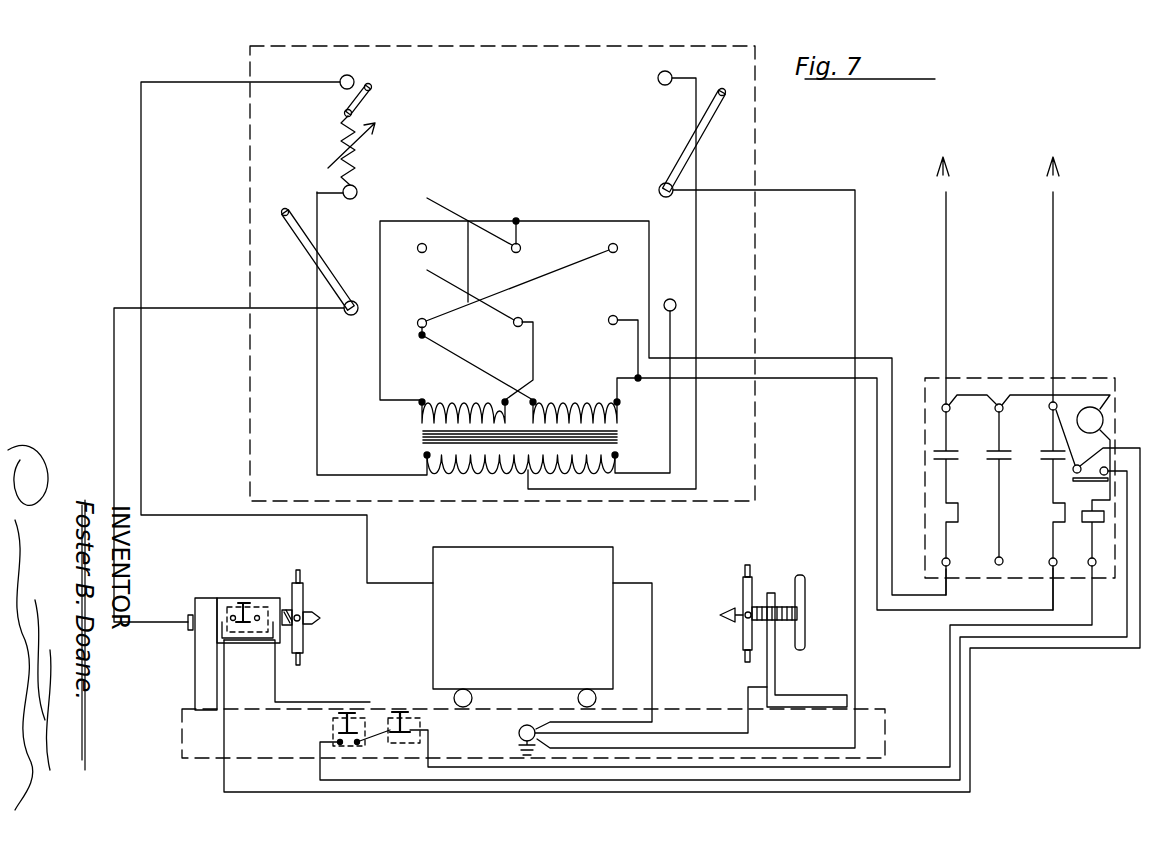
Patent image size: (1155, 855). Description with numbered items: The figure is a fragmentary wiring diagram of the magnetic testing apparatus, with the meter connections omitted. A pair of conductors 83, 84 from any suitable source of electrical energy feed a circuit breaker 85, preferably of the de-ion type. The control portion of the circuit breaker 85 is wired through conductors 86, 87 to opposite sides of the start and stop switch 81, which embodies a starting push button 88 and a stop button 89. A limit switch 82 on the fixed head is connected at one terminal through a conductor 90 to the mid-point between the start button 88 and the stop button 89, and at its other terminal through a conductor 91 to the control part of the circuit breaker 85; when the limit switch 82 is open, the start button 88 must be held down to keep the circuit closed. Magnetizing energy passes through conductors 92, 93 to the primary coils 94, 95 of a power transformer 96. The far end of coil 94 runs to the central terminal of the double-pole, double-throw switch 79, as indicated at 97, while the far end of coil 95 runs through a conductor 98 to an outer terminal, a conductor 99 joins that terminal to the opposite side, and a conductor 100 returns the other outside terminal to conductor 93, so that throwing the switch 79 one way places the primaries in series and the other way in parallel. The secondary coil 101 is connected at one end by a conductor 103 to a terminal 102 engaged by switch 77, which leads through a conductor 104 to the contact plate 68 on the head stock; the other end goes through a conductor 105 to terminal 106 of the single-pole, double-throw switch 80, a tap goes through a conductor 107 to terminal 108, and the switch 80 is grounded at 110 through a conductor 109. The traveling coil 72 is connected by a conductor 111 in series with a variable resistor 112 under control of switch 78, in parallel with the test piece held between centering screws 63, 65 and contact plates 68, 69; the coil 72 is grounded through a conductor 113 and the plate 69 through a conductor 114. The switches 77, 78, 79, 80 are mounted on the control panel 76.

The centering screw 63 is at (331, 619).
The centering screw 65 is at (728, 622).
The contact plate 68 is at (305, 603).
The contact plate 69 is at (752, 595).
The traveling coil 72 is at (535, 568).
The control panel 76 is at (735, 137).
The single throw switch 77 is at (330, 278).
The single throw switch 78 is at (370, 99).
The double-pole, double-throw switch 79 is at (470, 252).
The single-pole, double-throw switch 80 is at (707, 130).
The start and stop switch 81 is at (369, 718).
The limit switch 82 is at (244, 602).
The conductor 83 is at (948, 266).
The conductor 84 is at (1052, 272).
The circuit breaker 85 is at (1022, 408).
The conductor 86 is at (948, 647).
The conductor 87 is at (1040, 650).
The starting push button 88 is at (337, 731).
The stop button 89 is at (408, 716).
The conductor 90 is at (342, 690).
The conductor 91 is at (1130, 608).
The conductor 92 is at (380, 372).
The conductor 93 is at (828, 382).
The primary coil 94 is at (470, 398).
The primary coil 95 is at (588, 392).
The power transformer 96 is at (412, 444).
The connection to central terminal 97 is at (537, 357).
The conductor 98 is at (480, 350).
The conductor 99 is at (560, 264).
The conductor 100 is at (638, 340).
The secondary coil 101 is at (486, 470).
The terminal 102 is at (357, 193).
The conductor 103 is at (317, 367).
The conductor 104 is at (113, 426).
The conductor 105 is at (672, 428).
The terminal 106 is at (669, 298).
The conductor 107 is at (698, 406).
The terminal 108 is at (662, 88).
The conductor 109 is at (858, 277).
The ground 110 is at (519, 733).
The conductor 111 is at (140, 226).
The variable resistor 112 is at (350, 145).
The conductor 113 is at (652, 616).
The conductor 114 is at (722, 730).